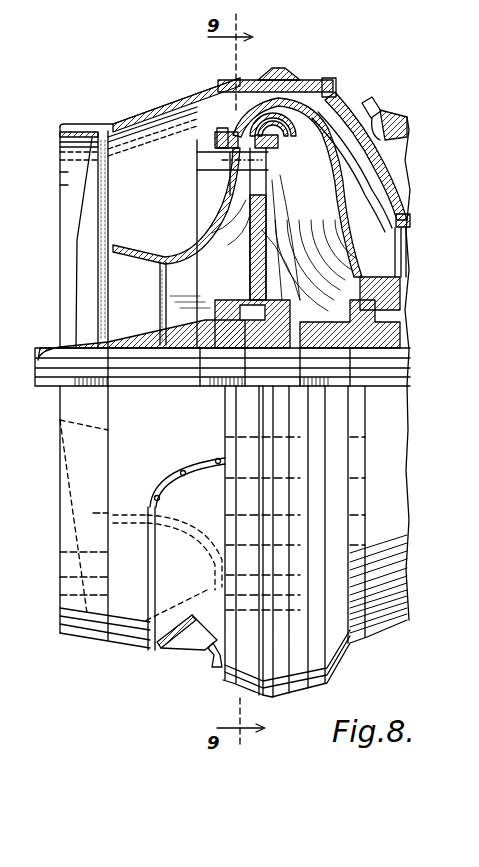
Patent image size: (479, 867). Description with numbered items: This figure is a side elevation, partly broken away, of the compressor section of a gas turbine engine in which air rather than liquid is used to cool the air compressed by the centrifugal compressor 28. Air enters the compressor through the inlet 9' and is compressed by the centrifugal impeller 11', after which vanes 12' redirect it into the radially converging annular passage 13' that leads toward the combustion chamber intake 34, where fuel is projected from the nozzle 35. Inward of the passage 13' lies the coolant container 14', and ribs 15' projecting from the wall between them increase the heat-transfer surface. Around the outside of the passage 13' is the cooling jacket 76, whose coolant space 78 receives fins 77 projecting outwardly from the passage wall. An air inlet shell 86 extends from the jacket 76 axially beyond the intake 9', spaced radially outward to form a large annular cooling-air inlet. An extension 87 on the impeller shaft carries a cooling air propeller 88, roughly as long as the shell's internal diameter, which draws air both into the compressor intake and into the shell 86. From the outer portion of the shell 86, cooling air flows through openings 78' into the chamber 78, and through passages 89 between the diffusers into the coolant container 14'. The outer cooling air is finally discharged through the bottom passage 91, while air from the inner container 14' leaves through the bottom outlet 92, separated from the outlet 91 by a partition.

The air inlet shell 86 is at (148, 111).
The cooling air propeller 88 is at (78, 311).
The passages 89 is at (205, 173).
The compressor 28 is at (200, 247).
The inlet 9' is at (145, 303).
The centrifugal impeller 11' is at (210, 254).
The ribs 15' is at (303, 229).
The cooling jacket 76 is at (350, 100).
The openings 78' is at (279, 173).
The vanes 12' is at (287, 89).
The annular passage 13' is at (309, 244).
The coolant container 14' is at (350, 281).
The intake 34 is at (405, 133).
The nozzle 35 is at (405, 150).
The coolant space 78 is at (415, 234).
The fins 77 is at (410, 216).
The extension 87 is at (174, 380).
The bottom outlet 92 is at (168, 652).
The bottom passage 91 is at (213, 655).